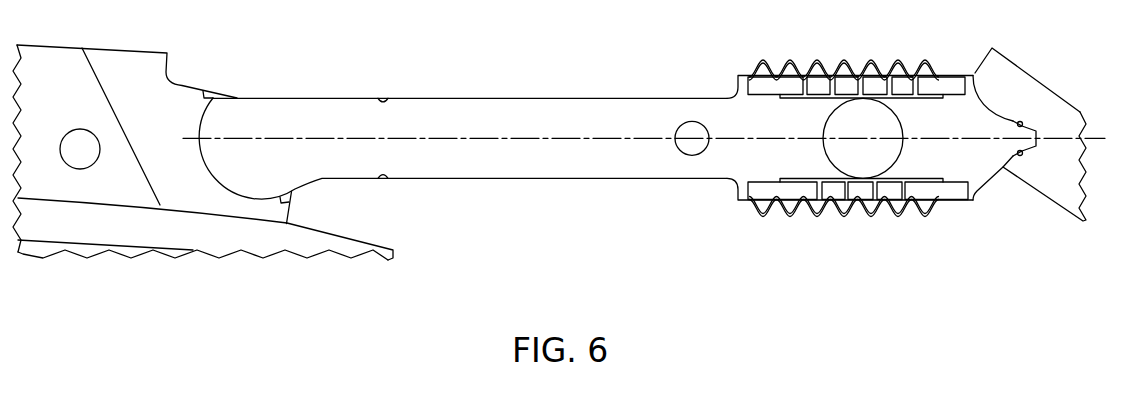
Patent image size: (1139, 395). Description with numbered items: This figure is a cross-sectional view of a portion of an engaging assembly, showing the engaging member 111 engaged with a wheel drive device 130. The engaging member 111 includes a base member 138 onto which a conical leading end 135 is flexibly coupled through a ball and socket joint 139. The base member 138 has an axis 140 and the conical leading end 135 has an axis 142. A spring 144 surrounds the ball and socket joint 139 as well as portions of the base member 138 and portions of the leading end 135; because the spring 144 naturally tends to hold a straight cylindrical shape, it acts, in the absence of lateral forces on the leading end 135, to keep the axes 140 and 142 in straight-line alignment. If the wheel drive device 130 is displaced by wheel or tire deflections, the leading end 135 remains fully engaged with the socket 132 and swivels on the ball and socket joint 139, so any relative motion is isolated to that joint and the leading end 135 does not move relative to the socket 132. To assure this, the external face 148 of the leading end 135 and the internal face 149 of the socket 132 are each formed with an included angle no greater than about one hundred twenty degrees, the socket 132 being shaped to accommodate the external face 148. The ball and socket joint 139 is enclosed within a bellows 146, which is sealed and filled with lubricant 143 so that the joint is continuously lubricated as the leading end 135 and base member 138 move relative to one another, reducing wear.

The engaging member 111 is at (585, 98).
The wheel drive device 130 is at (1002, 48).
The socket 132 is at (1046, 108).
The leading end 135 is at (995, 152).
The base member 138 is at (533, 178).
The ball and socket joint 139 is at (863, 168).
The axis 140 is at (453, 137).
The axis 142 is at (918, 195).
The lubricant 143 is at (792, 200).
The spring 144 is at (768, 77).
The bellows 146 is at (822, 61).
The external face 148 is at (1006, 108).
The internal face 149 is at (1021, 158).